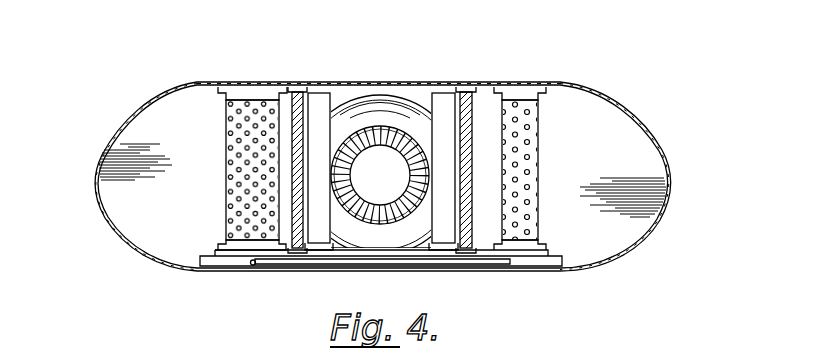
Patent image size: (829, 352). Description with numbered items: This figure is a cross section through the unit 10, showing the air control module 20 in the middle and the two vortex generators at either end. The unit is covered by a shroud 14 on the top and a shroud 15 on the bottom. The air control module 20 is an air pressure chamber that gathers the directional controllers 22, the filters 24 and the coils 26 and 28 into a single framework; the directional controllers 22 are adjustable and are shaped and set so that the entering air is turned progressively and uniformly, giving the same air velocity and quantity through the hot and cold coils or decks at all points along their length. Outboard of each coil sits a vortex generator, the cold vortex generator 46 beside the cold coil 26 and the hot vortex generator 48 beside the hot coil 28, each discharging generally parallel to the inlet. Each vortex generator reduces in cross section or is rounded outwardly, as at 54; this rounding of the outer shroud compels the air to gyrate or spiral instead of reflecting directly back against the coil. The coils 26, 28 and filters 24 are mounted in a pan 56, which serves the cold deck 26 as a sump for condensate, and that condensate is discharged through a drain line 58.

The unit 10 is at (568, 66).
The shroud 14 is at (380, 58).
The shroud 15 is at (346, 270).
The air control module 20 is at (414, 97).
The directional controllers 22 is at (328, 98).
The filters 24 is at (299, 243).
The coil 26 is at (252, 100).
The coil 28 is at (530, 100).
The vortex generator 46 is at (113, 188).
The vortex generator 48 is at (650, 160).
The rounded outer shroud 54 is at (604, 100).
The pan 56 is at (233, 257).
The drain line 58 is at (250, 266).